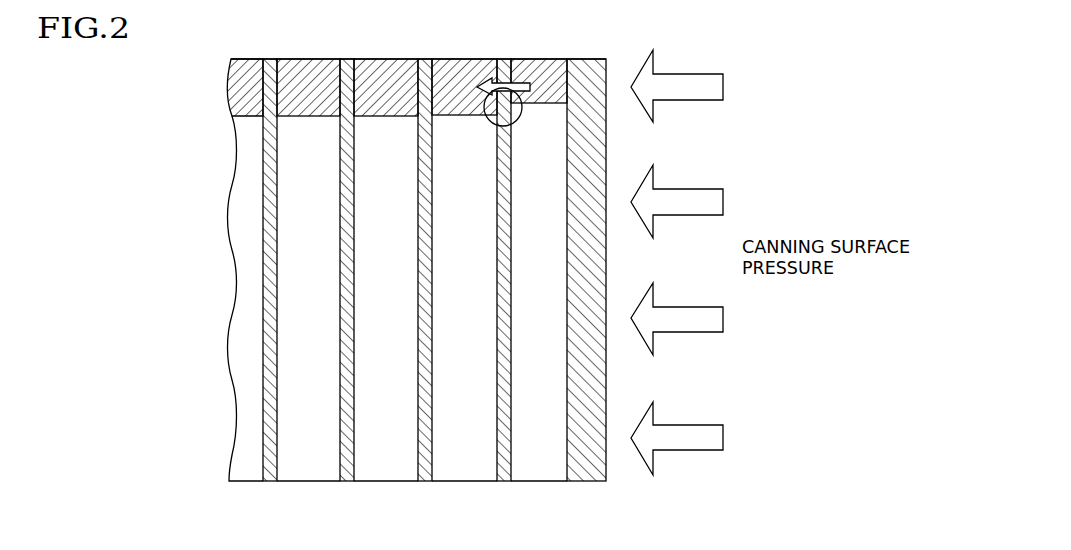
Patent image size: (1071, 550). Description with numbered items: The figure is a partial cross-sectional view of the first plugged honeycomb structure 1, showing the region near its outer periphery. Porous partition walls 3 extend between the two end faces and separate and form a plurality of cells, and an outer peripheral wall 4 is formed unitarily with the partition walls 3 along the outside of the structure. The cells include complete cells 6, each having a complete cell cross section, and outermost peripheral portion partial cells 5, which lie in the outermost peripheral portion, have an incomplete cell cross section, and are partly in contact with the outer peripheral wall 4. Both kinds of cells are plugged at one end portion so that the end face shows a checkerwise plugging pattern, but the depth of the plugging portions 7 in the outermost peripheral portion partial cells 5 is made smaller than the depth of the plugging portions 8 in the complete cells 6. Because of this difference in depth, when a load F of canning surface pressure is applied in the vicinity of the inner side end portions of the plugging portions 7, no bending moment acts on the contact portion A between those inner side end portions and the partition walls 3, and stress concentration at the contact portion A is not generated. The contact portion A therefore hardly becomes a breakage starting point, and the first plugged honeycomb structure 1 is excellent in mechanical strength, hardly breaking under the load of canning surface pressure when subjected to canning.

The first plugged honeycomb structure 1 is at (630, 375).
The porous partition walls 3 is at (421, 400).
The outer peripheral wall 4 is at (606, 254).
The outermost peripheral portion partial cells 5 is at (531, 452).
The complete cells 6 is at (463, 452).
The plugging portions in the outermost peripheral partial cells 7 is at (554, 61).
The plugging portions in the complete cells 8 is at (452, 64).
The load F is at (521, 61).
The contact portion A is at (517, 116).